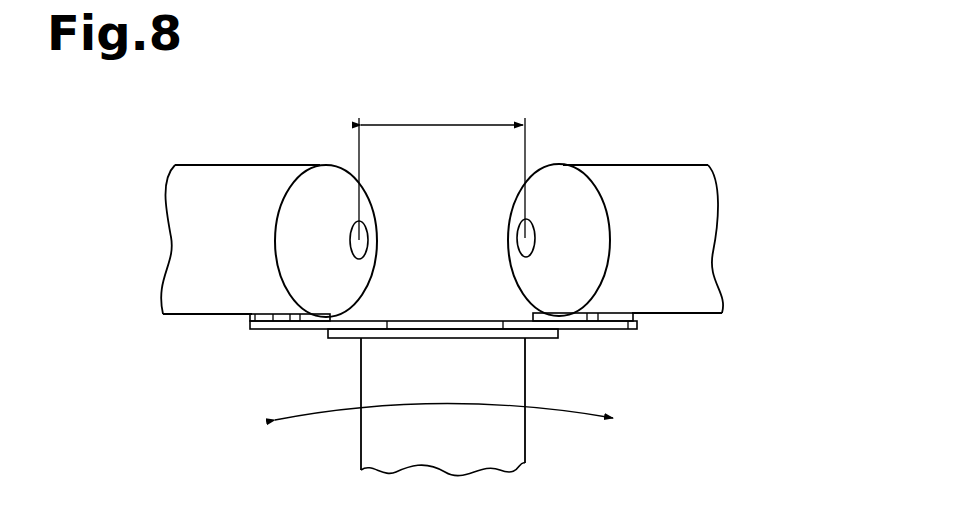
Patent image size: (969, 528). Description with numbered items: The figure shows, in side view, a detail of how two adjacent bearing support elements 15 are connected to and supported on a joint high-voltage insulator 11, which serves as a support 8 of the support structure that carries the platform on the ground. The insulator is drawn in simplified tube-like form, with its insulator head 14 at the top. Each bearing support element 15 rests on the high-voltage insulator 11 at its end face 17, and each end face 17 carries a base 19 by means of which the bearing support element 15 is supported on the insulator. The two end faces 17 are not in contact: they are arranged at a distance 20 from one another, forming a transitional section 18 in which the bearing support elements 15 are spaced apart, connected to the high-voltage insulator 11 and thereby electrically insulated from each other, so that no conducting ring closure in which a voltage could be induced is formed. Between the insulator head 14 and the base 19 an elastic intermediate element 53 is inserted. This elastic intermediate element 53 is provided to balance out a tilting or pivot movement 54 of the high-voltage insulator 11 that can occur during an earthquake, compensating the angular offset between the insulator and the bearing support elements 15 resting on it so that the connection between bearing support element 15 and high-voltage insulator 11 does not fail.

The support 8 is at (373, 436).
The high-voltage insulator 11 is at (508, 426).
The insulator head 14 is at (574, 356).
The bearing support element 15 is at (244, 190).
The end face 17 is at (333, 160).
The transitional section 18 is at (488, 195).
The base 19 is at (268, 333).
The distance 20 is at (443, 124).
The elastic intermediate element 53 is at (297, 333).
The tilting or pivot movement 54 is at (554, 409).